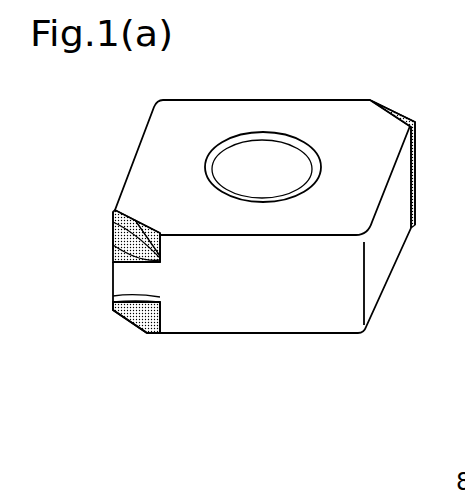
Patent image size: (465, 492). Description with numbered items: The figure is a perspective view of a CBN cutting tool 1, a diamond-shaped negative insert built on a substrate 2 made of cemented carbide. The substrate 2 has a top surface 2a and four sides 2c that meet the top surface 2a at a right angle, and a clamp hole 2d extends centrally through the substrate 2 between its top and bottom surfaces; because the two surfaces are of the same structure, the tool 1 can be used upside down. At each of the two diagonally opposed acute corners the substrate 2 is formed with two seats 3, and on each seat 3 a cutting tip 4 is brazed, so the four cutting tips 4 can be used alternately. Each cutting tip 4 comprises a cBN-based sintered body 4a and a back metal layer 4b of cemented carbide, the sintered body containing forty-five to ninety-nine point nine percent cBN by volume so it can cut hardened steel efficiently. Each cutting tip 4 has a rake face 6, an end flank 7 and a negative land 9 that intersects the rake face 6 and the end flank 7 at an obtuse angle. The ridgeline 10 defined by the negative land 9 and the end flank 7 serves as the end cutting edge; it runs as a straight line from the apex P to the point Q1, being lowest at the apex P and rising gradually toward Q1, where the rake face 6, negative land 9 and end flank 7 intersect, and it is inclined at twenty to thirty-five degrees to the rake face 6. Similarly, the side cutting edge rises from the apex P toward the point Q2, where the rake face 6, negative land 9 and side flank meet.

The CBN cutting tool 1 is at (231, 220).
The substrate 2 is at (285, 224).
The top surface 2a is at (183, 113).
The side 2c is at (295, 311).
The clamp hole 2d is at (281, 160).
The seat 3 is at (160, 263).
The cutting tip 4 is at (230, 232).
The cBN-based sintered body 4a is at (112, 252).
The back metal layer 4b is at (114, 266).
The rake face 6 is at (128, 212).
The end flank 7 is at (147, 259).
The negative land 9 is at (111, 230).
The ridgeline 10 is at (140, 230).
The apex P is at (111, 245).
The point Q1 is at (162, 257).
The point Q2 is at (113, 214).